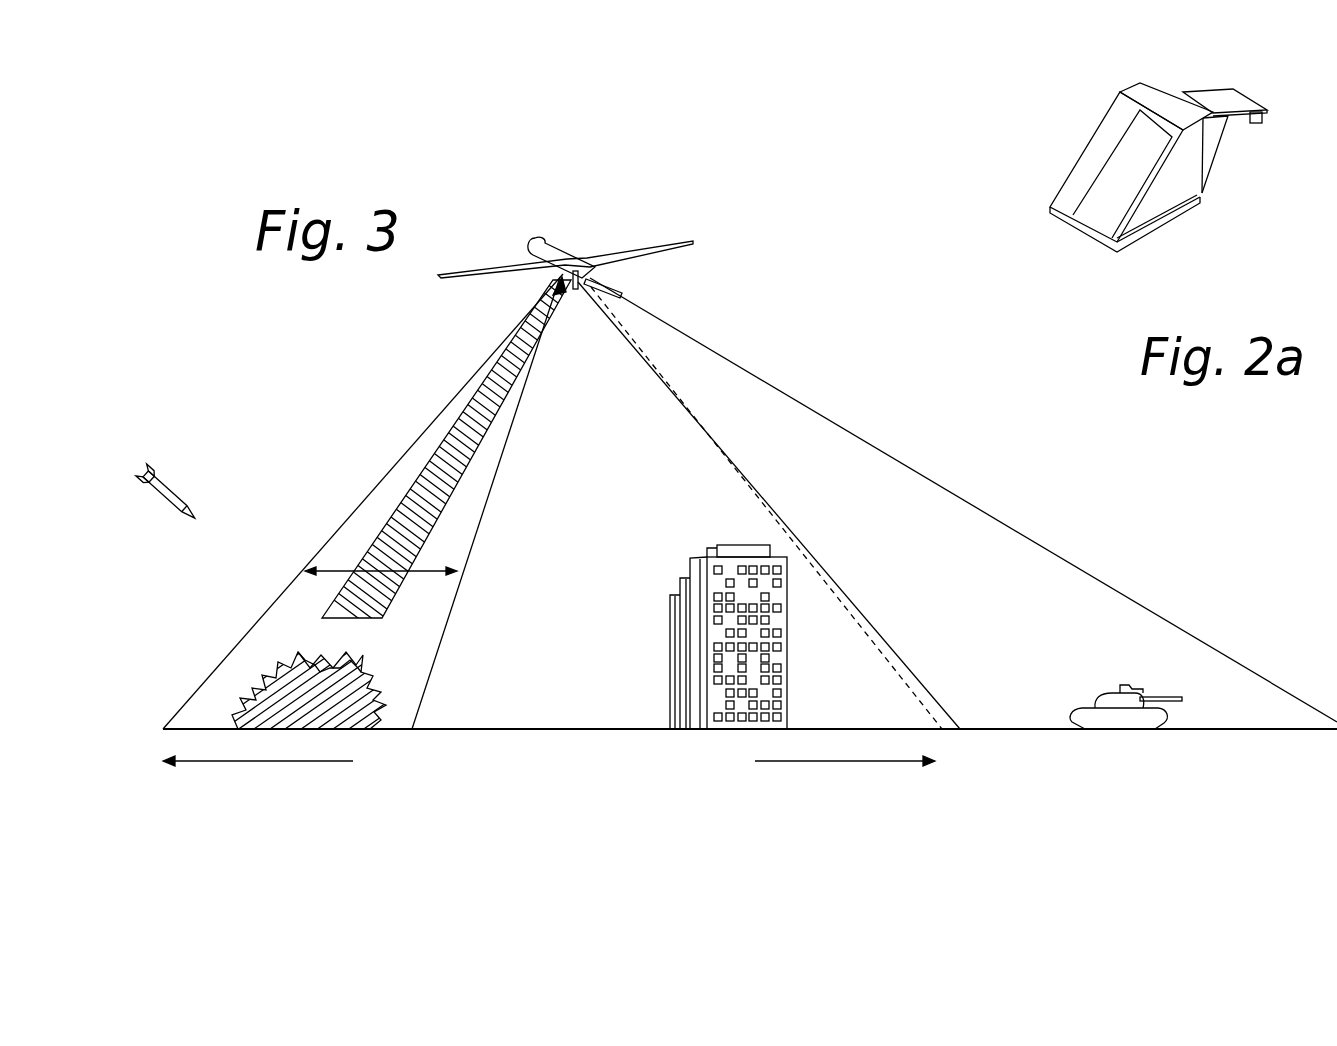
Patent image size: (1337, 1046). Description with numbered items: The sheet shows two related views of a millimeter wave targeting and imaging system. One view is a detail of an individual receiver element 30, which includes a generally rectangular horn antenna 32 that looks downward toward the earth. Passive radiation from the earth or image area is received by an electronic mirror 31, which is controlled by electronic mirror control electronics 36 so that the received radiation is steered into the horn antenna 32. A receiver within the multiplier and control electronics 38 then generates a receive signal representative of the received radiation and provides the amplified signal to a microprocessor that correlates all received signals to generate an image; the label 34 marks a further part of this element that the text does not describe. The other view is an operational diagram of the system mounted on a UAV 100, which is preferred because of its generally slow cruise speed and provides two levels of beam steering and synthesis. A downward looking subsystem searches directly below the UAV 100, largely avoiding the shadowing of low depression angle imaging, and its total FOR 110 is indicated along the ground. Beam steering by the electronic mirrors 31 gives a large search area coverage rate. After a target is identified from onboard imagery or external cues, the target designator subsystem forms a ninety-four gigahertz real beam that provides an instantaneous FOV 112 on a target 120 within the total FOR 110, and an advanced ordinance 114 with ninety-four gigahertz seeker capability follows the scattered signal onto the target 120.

In FIG. 3, the receiver element 30 is at (957, 503).
In FIG. 2A, the receiver element 30 is at (1155, 178).
In FIG. 2A, the electronic mirror 31 is at (1120, 205).
In FIG. 2A, the horn antenna 32 is at (1218, 157).
In FIG. 2A, the connector 34 is at (1262, 123).
In FIG. 2A, the electronic mirror control electronics 36 is at (1098, 157).
In FIG. 2A, the multiplier and control electronics 38 is at (1236, 97).
In FIG. 3, the UAV 100 is at (551, 240).
In FIG. 3, the total FOR 110 is at (268, 762).
In FIG. 3, the instantaneous FOV 112 is at (343, 567).
In FIG. 3, the advanced ordinance 114 is at (170, 498).
In FIG. 3, the target 120 is at (365, 690).